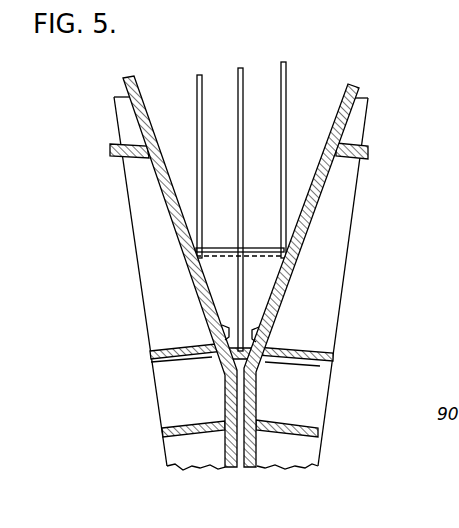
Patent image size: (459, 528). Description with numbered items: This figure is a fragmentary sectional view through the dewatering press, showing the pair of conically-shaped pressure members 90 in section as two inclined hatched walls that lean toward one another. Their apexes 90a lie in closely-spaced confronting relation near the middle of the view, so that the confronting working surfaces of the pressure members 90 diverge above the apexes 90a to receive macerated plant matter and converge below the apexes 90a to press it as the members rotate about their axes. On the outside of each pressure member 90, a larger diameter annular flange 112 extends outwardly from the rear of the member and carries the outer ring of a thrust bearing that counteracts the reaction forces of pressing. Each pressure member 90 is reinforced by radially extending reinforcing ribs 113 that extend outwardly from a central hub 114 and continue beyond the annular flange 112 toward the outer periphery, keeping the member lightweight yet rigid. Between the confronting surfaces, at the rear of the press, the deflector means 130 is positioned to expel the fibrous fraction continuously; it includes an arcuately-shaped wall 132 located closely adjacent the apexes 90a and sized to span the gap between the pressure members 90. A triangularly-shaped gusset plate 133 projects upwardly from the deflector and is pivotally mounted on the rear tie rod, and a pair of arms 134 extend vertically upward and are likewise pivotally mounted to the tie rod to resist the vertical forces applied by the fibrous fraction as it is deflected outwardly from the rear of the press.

The pressure member 90 is at (141, 97).
The apex 90a is at (220, 333).
The annular flange 112 is at (122, 135).
The reinforcing rib 113 is at (122, 110).
The central hub 114 is at (167, 363).
The deflector means 130 is at (257, 249).
The arcuately-shaped wall 132 is at (233, 377).
The gusset plate 133 is at (238, 183).
The arm 134 is at (197, 118).